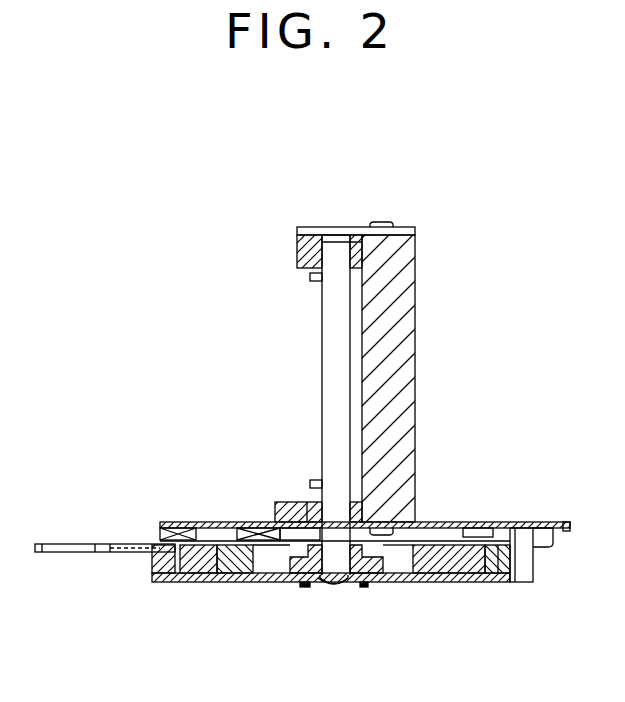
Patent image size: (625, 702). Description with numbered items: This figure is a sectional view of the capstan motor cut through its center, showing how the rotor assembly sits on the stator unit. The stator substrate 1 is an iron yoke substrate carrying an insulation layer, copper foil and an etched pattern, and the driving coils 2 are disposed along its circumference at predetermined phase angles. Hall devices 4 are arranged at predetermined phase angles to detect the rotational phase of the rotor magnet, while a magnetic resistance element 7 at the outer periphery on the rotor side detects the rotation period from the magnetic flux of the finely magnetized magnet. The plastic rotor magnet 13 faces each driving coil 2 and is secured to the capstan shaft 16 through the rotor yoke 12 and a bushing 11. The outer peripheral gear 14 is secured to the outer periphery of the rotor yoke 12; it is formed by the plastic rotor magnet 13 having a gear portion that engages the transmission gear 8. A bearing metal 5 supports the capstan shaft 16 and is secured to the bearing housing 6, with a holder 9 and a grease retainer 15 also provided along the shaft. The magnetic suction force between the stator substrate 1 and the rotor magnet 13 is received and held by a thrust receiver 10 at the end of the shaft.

The stator substrate 1 is at (532, 522).
The driving coil 2 is at (211, 580).
The Hall device 4 is at (484, 522).
The bearing metal 5 is at (297, 253).
The bearing housing 6 is at (410, 371).
The magnetic resistance element 7 is at (547, 548).
The transmission gear 8 is at (68, 553).
The holder 9 is at (407, 228).
The thrust receiver 10 is at (354, 238).
The bushing 11 is at (312, 583).
The rotor yoke 12 is at (392, 582).
The plastic rotor magnet 13 is at (443, 582).
The outer peripheral gear 14 is at (500, 582).
The grease retainer 15 is at (310, 281).
The capstan shaft 16 is at (323, 373).